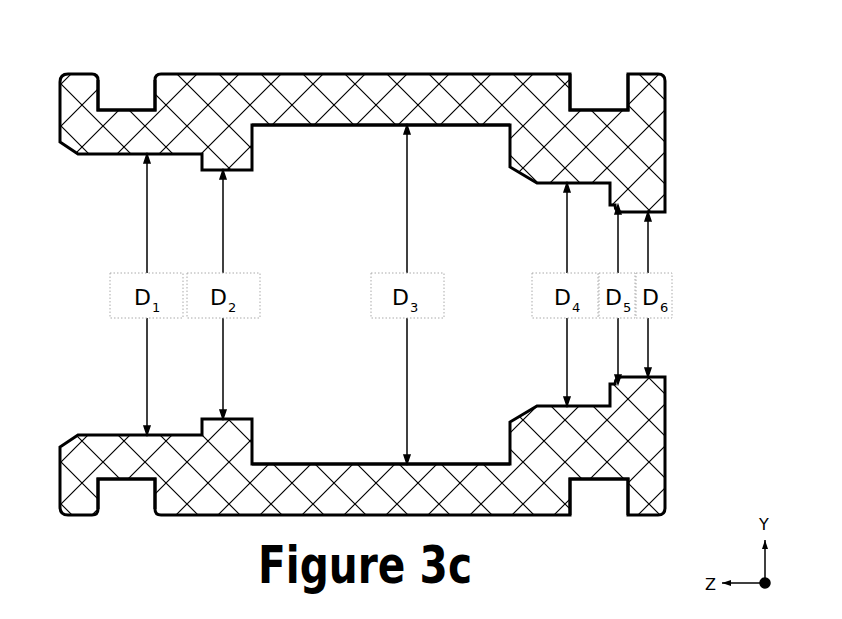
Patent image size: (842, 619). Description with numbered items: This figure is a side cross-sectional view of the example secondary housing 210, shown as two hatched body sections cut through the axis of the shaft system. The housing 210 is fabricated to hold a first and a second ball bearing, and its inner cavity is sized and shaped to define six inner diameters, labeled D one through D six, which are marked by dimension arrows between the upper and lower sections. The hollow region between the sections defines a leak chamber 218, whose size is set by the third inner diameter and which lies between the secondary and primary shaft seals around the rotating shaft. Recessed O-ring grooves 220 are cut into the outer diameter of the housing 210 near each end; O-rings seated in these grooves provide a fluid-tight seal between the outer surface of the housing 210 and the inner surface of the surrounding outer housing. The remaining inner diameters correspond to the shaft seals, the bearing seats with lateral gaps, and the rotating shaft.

The housing 210 is at (712, 31).
The leak chamber 218 is at (477, 134).
The recessed O-ring grooves 220 is at (139, 72).